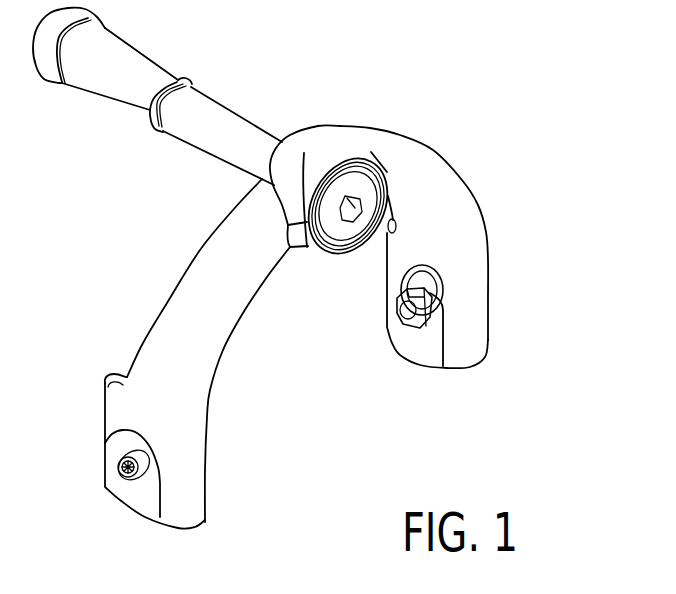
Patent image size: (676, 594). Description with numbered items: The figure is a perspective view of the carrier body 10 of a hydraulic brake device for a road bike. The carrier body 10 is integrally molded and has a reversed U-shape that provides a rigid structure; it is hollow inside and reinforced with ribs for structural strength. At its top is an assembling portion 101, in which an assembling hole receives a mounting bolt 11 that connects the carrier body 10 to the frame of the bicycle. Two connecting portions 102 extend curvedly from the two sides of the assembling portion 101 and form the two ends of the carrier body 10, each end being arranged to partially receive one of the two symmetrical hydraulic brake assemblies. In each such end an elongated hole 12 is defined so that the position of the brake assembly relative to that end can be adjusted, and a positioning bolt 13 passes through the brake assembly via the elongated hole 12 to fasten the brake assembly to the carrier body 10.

The carrier body 10 is at (205, 238).
The assembling portion 101 is at (337, 152).
The connecting portion 102 is at (468, 272).
The mounting bolt 11 is at (233, 115).
The elongated hole 12 is at (427, 290).
The positioning bolt 13 is at (430, 323).